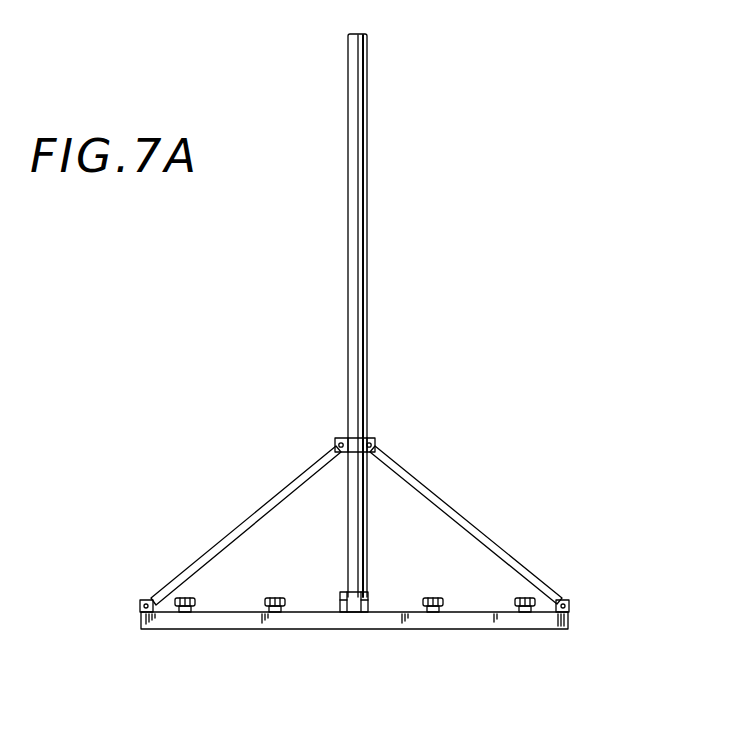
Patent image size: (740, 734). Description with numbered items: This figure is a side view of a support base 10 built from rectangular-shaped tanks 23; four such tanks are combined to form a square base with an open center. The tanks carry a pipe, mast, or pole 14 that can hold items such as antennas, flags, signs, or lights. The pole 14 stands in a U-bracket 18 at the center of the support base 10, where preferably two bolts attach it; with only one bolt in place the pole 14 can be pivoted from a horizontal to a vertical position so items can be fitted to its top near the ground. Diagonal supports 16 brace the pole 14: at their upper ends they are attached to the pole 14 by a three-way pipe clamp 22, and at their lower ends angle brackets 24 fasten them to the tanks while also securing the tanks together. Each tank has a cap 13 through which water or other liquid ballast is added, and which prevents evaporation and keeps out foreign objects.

The support base 10 is at (538, 417).
The cap 13 is at (266, 604).
The pole 14 is at (368, 331).
The diagonal supports 16 is at (226, 531).
The U-bracket 18 is at (340, 597).
The three-way pipe clamp 22 is at (335, 441).
The rectangular-shaped tanks 23 is at (163, 629).
The angle brackets 24 is at (140, 607).